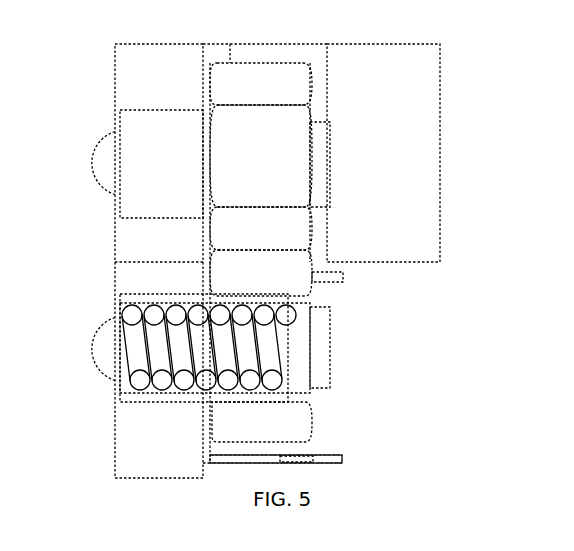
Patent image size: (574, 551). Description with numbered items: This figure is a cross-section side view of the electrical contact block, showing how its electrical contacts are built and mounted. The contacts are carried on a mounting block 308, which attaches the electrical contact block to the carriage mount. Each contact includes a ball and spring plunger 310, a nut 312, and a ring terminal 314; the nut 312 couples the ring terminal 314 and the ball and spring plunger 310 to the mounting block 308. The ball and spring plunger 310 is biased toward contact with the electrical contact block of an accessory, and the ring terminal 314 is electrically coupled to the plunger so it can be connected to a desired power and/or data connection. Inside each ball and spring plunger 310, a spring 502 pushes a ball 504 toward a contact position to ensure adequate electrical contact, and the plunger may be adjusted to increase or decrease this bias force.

The mounting block 308 is at (394, 66).
The ball and spring plunger 310 is at (119, 111).
The nut 312 is at (290, 62).
The ring terminal 314 is at (343, 280).
The spring 502 is at (94, 148).
The ball 504 is at (119, 306).